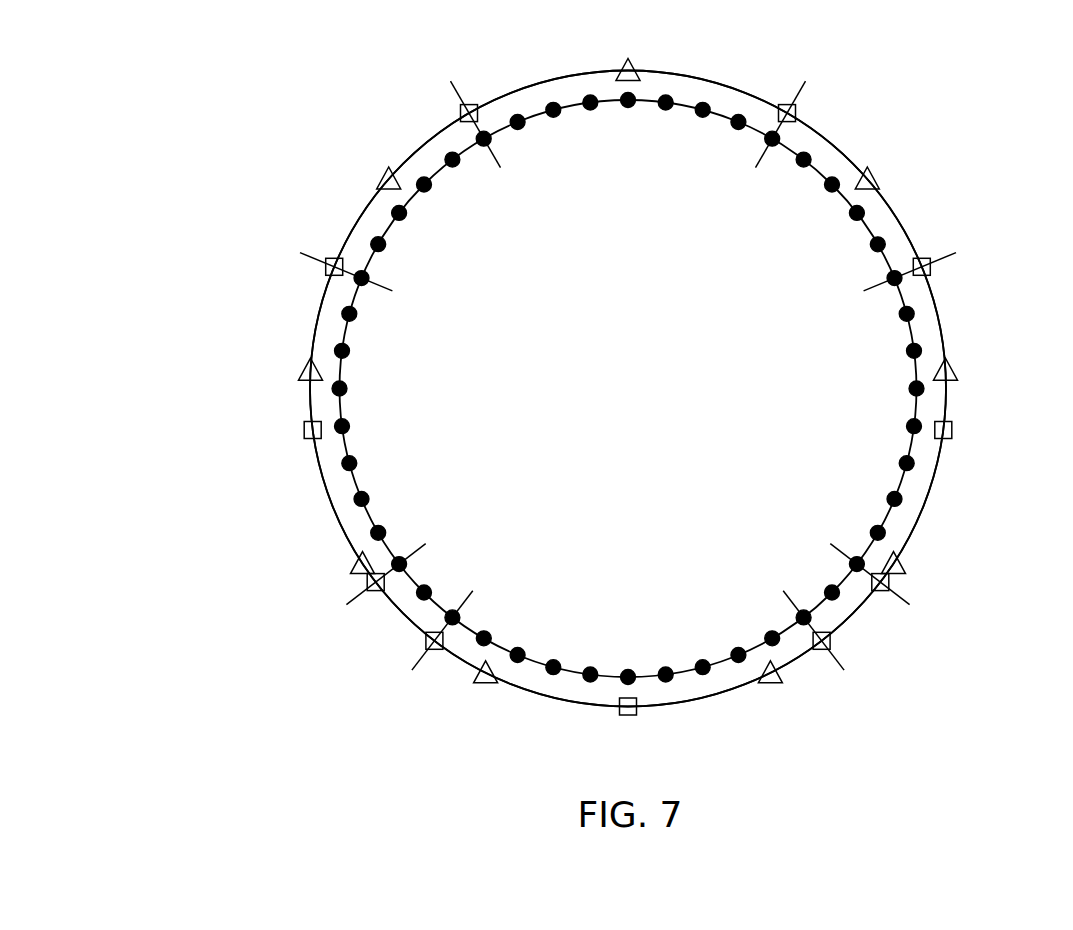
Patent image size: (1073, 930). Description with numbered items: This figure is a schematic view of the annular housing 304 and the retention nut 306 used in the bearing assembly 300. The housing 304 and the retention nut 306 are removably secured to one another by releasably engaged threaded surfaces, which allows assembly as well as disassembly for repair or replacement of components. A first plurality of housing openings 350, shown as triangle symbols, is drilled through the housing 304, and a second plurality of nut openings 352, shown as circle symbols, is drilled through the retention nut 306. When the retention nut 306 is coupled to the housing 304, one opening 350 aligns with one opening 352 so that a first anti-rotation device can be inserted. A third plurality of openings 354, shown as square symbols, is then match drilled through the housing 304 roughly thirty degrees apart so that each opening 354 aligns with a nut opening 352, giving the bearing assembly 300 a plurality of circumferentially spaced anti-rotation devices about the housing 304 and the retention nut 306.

The bearing assembly 300 is at (252, 121).
The bearing housing 304 is at (745, 95).
The bearing retention nut 306 is at (755, 130).
The first plurality of housing openings 350 is at (629, 58).
The second plurality of nut openings 352 is at (663, 109).
The third plurality of openings 354 is at (461, 107).